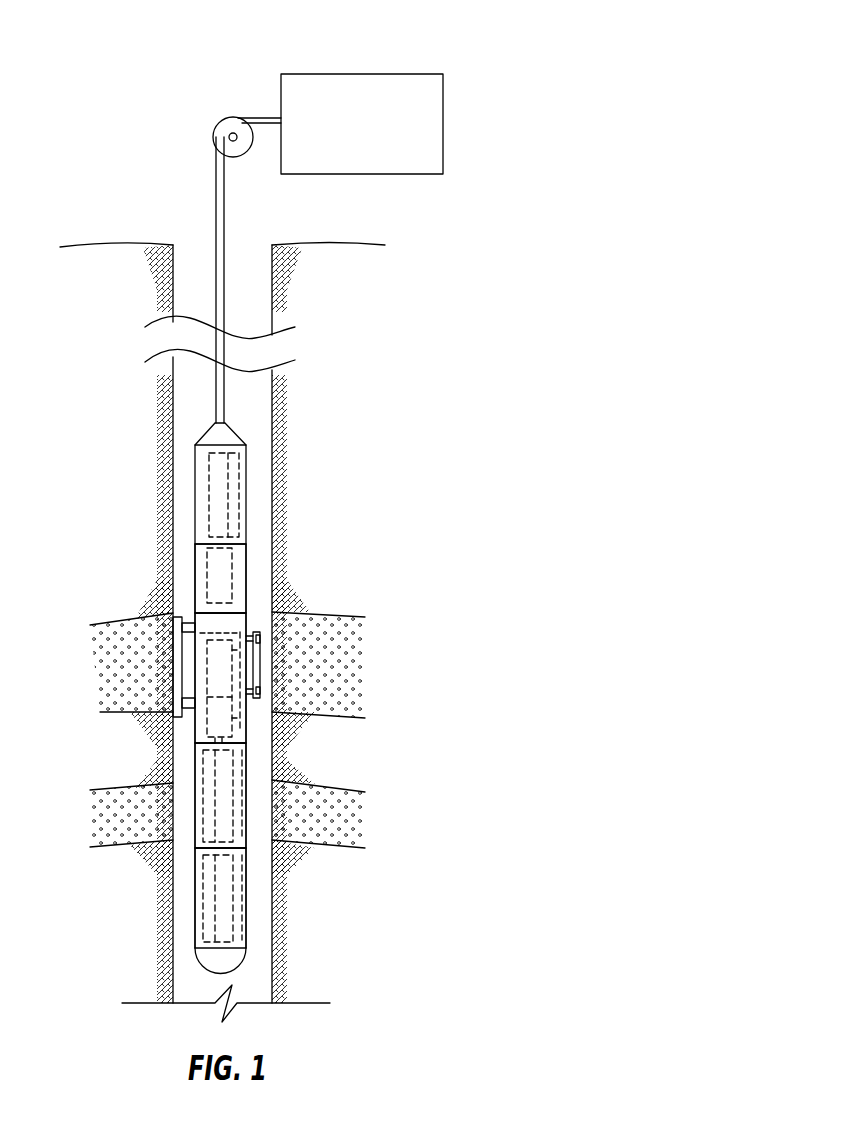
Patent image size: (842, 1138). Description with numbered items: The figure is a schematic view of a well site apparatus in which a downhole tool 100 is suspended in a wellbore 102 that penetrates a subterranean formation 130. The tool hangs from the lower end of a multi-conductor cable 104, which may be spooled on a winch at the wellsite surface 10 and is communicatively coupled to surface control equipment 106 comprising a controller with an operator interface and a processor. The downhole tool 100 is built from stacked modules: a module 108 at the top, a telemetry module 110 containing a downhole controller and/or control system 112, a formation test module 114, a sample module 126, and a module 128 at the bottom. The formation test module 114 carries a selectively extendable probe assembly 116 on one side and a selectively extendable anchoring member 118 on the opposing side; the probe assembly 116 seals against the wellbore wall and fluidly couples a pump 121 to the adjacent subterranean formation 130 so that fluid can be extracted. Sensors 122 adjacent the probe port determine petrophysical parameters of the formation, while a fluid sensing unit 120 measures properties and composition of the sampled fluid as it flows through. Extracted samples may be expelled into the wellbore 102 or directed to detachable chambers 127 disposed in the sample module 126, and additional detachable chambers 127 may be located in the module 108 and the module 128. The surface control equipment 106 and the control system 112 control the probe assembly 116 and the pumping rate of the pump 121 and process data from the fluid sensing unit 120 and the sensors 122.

The wellsite surface 10 is at (121, 243).
The downhole tool 100 is at (320, 575).
The wellbore 102 is at (270, 414).
The multi-conductor cable 104 is at (215, 197).
The surface control equipment 106 is at (425, 74).
The module 108 is at (200, 480).
The telemetry module 110 is at (237, 568).
The downhole controller and/or control system 112 is at (207, 568).
The formation test module 114 is at (203, 621).
The probe assembly 116 is at (260, 664).
The anchoring member 118 is at (177, 702).
The fluid sensing unit 120 is at (207, 678).
The pump 121 is at (205, 717).
The sensors 122 is at (258, 640).
The sample module 126 is at (237, 767).
The detachable chambers 127 is at (209, 517).
The module 128 is at (200, 884).
The subterranean formation 130 is at (117, 628).